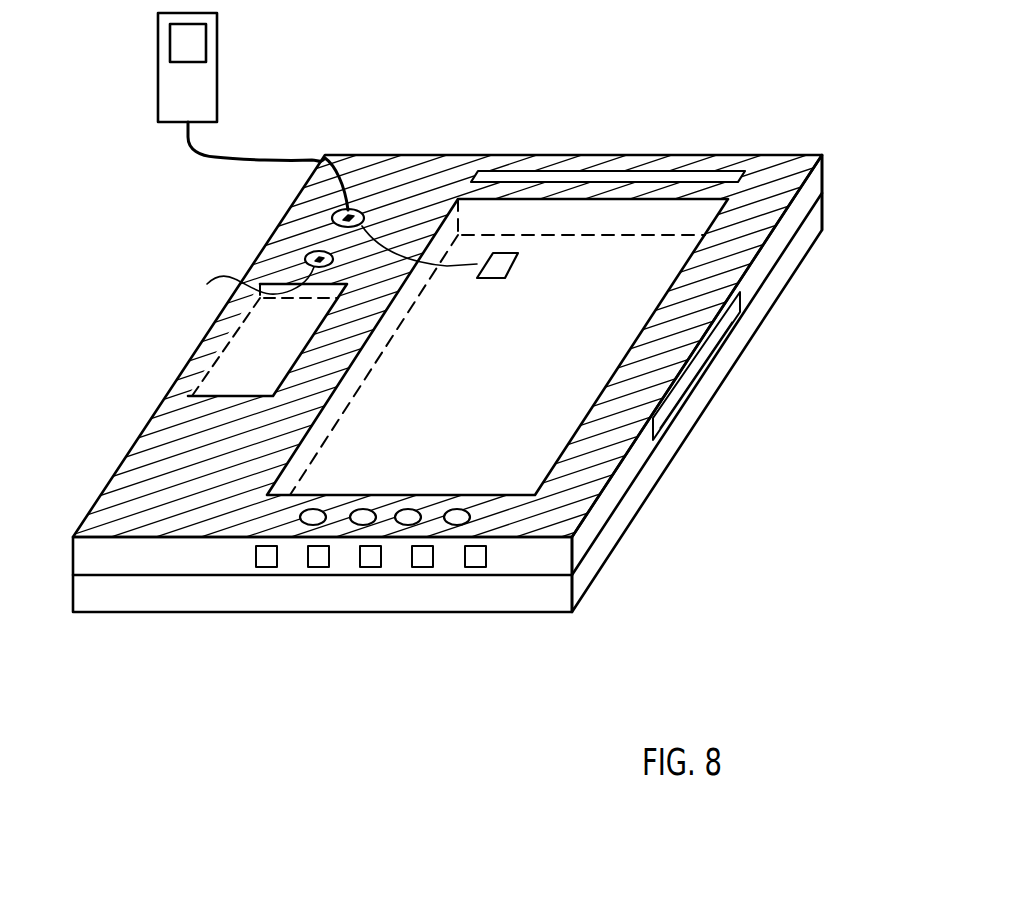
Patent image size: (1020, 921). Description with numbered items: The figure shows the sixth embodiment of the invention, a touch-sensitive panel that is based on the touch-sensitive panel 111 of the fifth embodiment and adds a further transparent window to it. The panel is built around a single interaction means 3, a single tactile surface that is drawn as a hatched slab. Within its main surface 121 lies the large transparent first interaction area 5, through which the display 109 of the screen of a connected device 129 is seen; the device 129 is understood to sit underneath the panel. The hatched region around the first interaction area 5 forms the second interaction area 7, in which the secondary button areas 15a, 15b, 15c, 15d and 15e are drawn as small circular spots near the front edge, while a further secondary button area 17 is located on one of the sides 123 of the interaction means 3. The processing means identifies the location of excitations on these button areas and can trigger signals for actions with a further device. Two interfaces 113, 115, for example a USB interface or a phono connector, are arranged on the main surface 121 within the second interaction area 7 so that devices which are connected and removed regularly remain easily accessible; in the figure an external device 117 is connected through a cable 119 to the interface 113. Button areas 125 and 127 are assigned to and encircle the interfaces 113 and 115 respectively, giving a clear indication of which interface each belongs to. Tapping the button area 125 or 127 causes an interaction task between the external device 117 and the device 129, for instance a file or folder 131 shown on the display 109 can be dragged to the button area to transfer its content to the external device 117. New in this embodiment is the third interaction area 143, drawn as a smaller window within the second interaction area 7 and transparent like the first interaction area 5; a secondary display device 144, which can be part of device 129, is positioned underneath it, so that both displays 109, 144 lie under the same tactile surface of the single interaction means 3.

The single interaction means 3 is at (614, 495).
The first interaction area 5 is at (558, 227).
The second interaction area 7 is at (418, 199).
The secondary button area 15a is at (300, 517).
The secondary button area 15b is at (360, 509).
The secondary button area 15c is at (400, 511).
The secondary button area 15d is at (450, 511).
The secondary button area 15e is at (643, 177).
The secondary button area 17 is at (707, 350).
The display 109 is at (607, 262).
The touch-sensitive panel 111 is at (453, 128).
The interface 113 is at (333, 217).
The interface 115 is at (306, 258).
The external device 117 is at (218, 60).
The cable 119 is at (262, 160).
The main surface 121 is at (772, 185).
The side 123 is at (810, 187).
The button area 125 is at (348, 209).
The button area 127 is at (243, 282).
The device 129 is at (580, 582).
The file or folder 131 is at (510, 265).
The third interaction area 143 is at (237, 328).
The secondary display device 144 is at (238, 365).